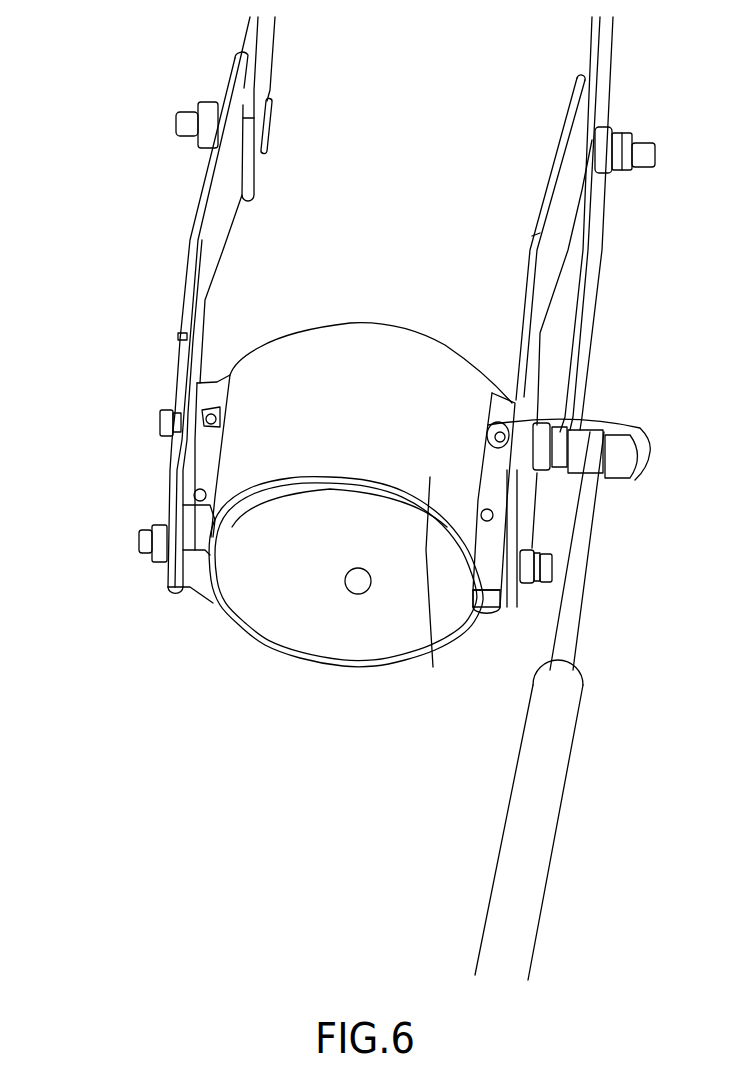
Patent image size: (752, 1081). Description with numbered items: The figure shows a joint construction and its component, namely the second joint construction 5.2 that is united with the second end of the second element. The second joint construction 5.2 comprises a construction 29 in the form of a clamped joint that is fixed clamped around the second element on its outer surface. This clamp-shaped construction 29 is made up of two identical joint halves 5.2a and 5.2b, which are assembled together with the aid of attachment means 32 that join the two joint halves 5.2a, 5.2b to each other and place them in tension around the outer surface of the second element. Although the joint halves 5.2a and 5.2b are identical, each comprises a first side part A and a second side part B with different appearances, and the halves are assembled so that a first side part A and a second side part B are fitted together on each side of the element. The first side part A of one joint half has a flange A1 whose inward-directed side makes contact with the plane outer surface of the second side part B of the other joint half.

The second joint construction 5.2 is at (105, 173).
The construction having the form of a clamped joint 29 is at (333, 335).
The attachment means 32 is at (203, 498).
The flange A1 is at (520, 588).
The first side part A is at (487, 603).
The joint half 5.2a is at (212, 603).
The joint half 5.2b is at (430, 477).
The second side part B is at (492, 607).